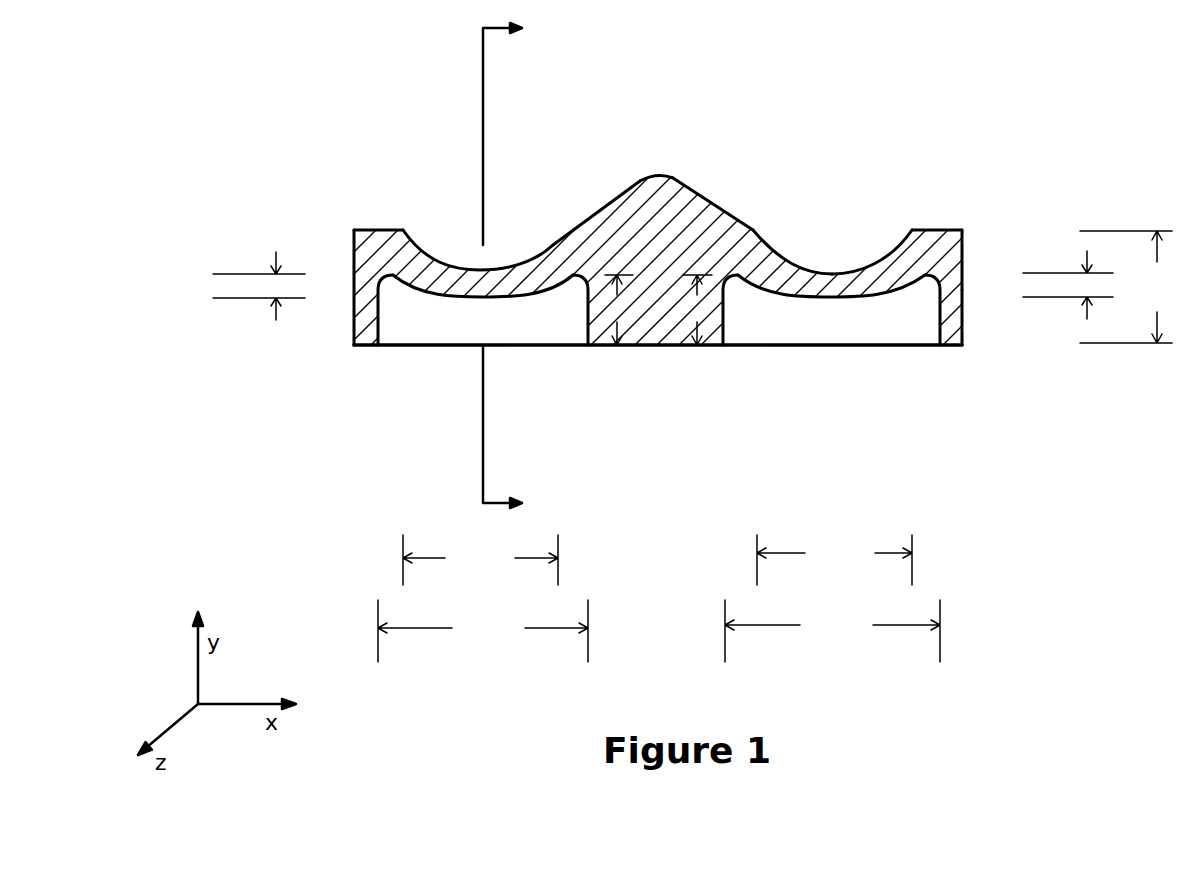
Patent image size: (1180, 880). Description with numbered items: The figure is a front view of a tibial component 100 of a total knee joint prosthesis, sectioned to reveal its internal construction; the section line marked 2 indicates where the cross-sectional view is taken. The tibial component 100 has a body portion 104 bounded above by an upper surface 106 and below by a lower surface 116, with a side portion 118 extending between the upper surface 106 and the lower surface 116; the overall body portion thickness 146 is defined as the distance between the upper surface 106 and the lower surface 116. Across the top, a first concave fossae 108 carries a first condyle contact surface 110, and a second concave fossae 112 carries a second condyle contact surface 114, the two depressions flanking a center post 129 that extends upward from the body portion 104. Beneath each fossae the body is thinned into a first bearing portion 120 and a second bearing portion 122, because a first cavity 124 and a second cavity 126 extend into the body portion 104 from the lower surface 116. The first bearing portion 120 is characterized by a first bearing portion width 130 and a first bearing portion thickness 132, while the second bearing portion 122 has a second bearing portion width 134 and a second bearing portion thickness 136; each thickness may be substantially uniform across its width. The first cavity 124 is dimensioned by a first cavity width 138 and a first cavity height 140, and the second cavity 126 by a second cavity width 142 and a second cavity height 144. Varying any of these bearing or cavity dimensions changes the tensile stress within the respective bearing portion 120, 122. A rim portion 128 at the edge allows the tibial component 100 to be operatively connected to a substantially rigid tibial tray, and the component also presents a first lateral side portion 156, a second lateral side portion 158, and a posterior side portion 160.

The tibial component 100 is at (938, 105).
The body portion 104 is at (640, 210).
The upper surface 106 is at (943, 230).
The first concave fossae 108 is at (430, 212).
The first condyle contact surface 110 is at (543, 250).
The second concave fossae 112 is at (806, 215).
The second condyle contact surface 114 is at (900, 240).
The lower surface 116 is at (950, 347).
The side portion 118 is at (962, 282).
The first bearing portion 120 is at (472, 292).
The second bearing portion 122 is at (830, 292).
The first cavity 124 is at (413, 325).
The second cavity 126 is at (768, 315).
The rim portion 128 is at (354, 335).
The center post 129 is at (660, 180).
The first bearing portion width 130 is at (480, 560).
The first bearing portion thickness 132 is at (259, 289).
The second bearing portion width 134 is at (834, 560).
The second bearing portion thickness 136 is at (1068, 289).
The first cavity width 138 is at (483, 631).
The first cavity height 140 is at (621, 310).
The second cavity width 142 is at (832, 631).
The second cavity height 144 is at (701, 310).
The body portion thickness 146 is at (1130, 287).
The first lateral side portion 156 is at (354, 248).
The second lateral side portion 158 is at (965, 325).
The posterior side portion 160 is at (668, 323).
The section line 2- 2 is at (514, 269).